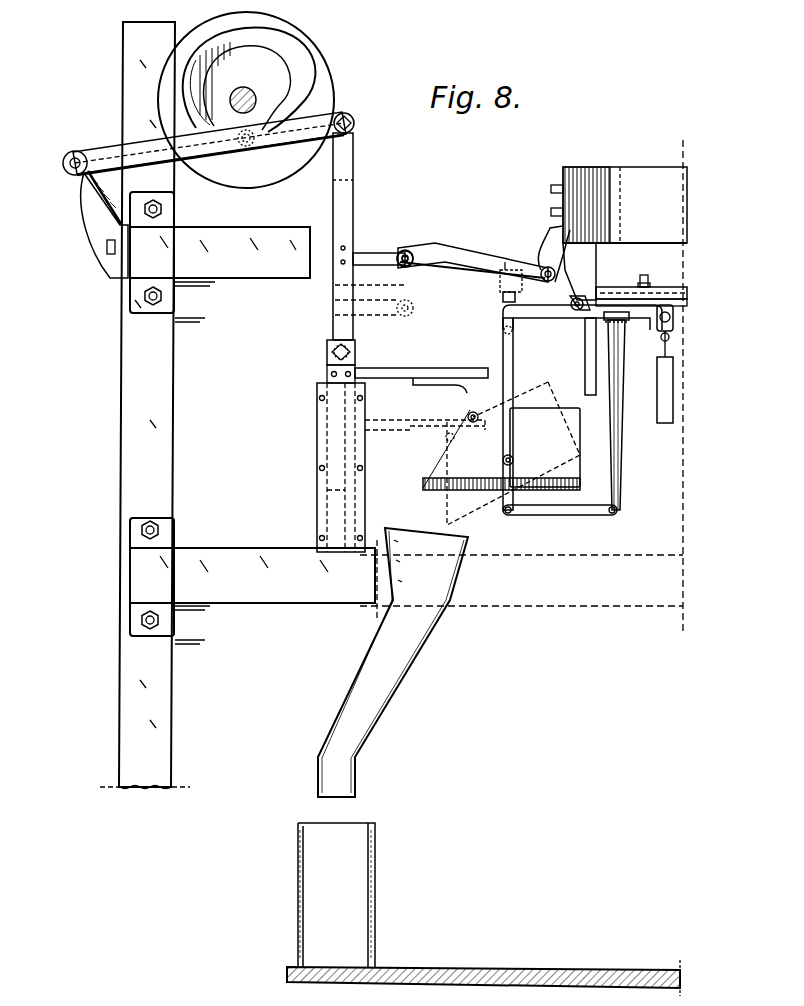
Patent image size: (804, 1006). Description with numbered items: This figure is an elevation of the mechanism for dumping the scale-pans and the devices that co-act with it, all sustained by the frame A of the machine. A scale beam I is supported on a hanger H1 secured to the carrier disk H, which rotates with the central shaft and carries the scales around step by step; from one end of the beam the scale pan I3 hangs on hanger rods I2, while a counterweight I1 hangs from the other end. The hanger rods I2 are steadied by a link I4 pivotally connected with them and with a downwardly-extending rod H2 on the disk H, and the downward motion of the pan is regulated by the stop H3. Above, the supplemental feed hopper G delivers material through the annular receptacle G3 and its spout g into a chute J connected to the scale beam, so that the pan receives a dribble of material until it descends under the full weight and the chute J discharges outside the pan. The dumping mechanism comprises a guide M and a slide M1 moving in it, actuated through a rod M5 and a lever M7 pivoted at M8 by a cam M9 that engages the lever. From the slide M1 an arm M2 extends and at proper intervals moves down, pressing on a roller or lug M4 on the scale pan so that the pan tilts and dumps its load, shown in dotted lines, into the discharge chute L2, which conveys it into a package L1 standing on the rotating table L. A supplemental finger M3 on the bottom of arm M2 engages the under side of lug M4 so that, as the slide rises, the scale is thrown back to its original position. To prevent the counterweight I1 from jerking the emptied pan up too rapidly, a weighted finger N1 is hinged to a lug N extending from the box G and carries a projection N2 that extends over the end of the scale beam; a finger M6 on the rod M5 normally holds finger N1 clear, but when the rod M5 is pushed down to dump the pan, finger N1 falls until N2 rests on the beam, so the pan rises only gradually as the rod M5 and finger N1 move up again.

The frame A is at (391, 405).
The cam wheel R is at (244, 94).
The guide M is at (316, 426).
The slide M1 is at (355, 366).
The arm M2 is at (410, 368).
The supplemental finger M3 is at (445, 392).
The roller or lug M4 is at (472, 411).
The rod M5 is at (352, 284).
The finger M6 is at (372, 260).
The lever M7 is at (346, 113).
The pivot M8 is at (75, 158).
The cam M9 is at (279, 116).
The lug N is at (544, 244).
The finger or weighted lever N1 is at (478, 256).
The projection N2 is at (500, 290).
The supplemental feed hopper G is at (619, 205).
The annular receptacle G3 is at (579, 271).
The spout g is at (573, 293).
The carrier disk H is at (650, 286).
The hanger H1 is at (644, 280).
The downwardly-extending rod H2 is at (622, 354).
The stop H3 is at (669, 323).
The scale beam I is at (538, 313).
The counterweight I1 is at (657, 396).
The hanger rod I2 is at (514, 352).
The scale pan I3 is at (545, 447).
The link I4 is at (554, 515).
The chute J is at (585, 360).
The rotating table L is at (483, 971).
The package L1 is at (336, 895).
The discharge chute L2 is at (393, 662).